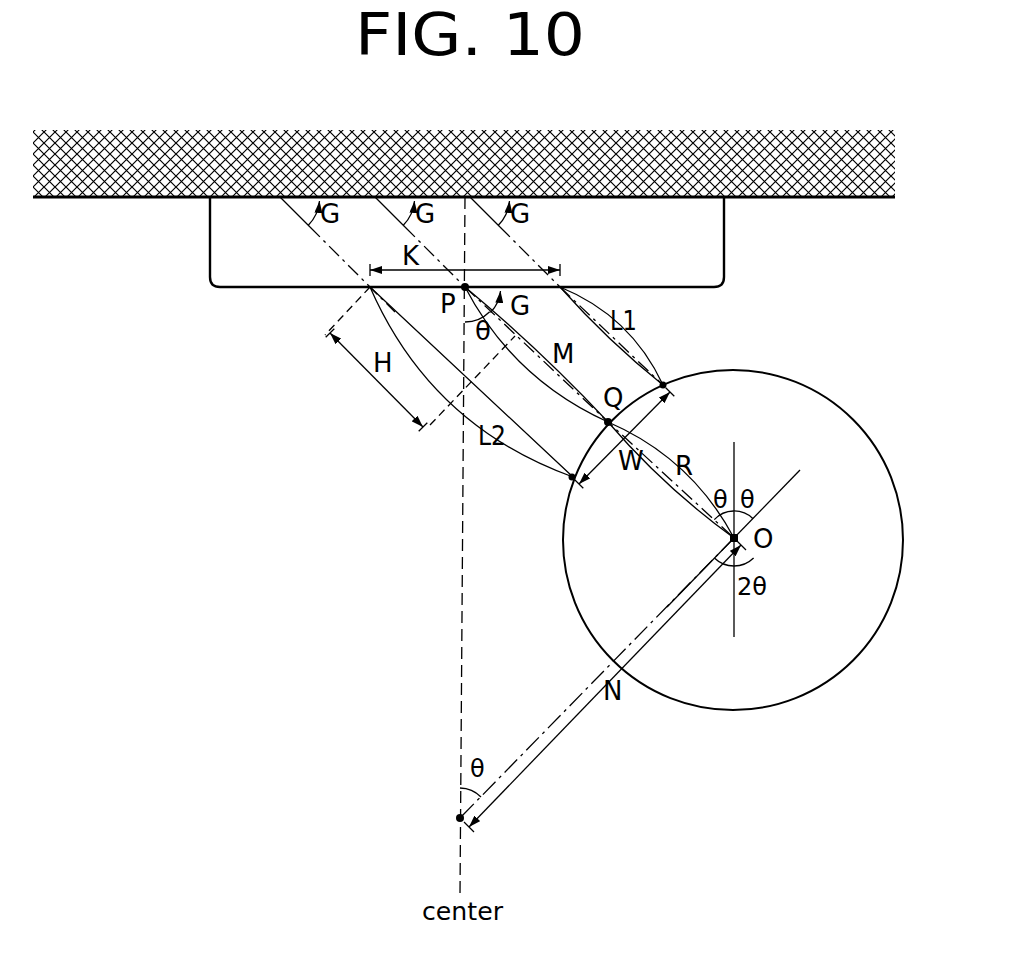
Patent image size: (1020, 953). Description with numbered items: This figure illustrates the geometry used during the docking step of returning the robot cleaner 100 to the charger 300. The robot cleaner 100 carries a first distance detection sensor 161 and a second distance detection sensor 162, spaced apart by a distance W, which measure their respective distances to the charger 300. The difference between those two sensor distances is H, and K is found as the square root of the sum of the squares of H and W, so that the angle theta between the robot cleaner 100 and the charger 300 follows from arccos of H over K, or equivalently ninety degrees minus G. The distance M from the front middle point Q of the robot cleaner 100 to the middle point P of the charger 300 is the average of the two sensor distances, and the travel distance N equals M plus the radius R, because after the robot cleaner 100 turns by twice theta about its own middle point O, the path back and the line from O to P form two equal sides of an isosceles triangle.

The charger 300 is at (724, 232).
The robot cleaner 100 is at (806, 383).
The first distance detection sensor 161 is at (663, 385).
The second distance detection sensor 162 is at (572, 477).